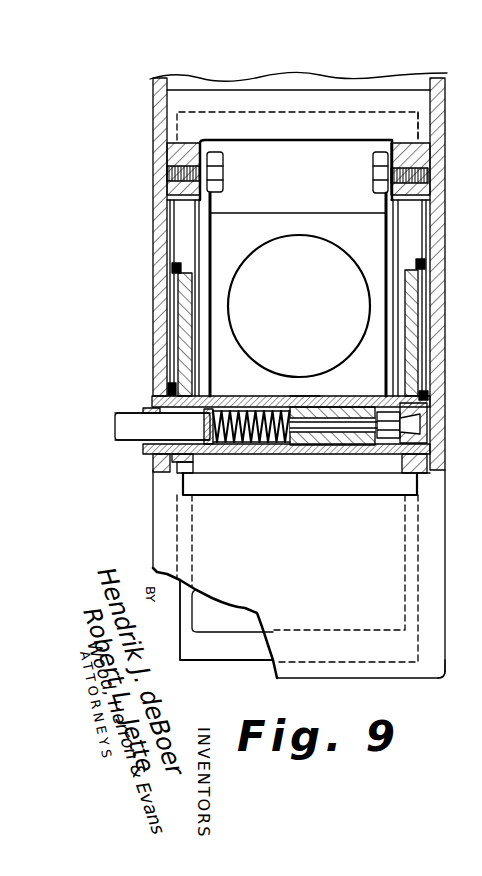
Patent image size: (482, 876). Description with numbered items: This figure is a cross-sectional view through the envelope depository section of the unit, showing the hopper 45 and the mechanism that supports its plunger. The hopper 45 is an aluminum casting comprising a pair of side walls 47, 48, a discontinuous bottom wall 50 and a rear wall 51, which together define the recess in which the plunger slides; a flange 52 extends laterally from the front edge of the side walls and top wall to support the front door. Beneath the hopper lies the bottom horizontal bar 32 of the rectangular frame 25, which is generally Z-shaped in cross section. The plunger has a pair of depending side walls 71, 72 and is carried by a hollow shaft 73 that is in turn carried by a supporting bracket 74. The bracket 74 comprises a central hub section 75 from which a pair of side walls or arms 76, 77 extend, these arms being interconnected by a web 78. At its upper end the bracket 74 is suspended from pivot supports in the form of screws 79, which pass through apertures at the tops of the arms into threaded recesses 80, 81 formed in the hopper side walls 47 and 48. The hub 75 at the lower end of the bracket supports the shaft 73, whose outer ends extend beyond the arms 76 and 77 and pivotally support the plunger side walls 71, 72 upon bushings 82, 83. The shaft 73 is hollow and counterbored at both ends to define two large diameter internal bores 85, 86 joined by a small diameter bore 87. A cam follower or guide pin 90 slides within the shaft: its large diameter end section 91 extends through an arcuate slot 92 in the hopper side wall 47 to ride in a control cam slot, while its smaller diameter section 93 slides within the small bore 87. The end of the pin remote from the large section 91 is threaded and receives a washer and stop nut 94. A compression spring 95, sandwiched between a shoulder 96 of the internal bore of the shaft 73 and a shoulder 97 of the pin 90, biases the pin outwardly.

The rectangular frame 25 is at (478, 798).
The bottom horizontal bar 32 is at (478, 828).
The hopper 45 is at (432, 671).
The side wall 47 is at (158, 313).
The side wall 48 is at (436, 312).
The bottom wall 50 is at (299, 574).
The rear wall 51 is at (350, 680).
The flange 52 is at (454, 134).
The side wall 71 is at (186, 333).
The side wall 72 is at (420, 303).
The hollow shaft 73 is at (334, 437).
The supporting bracket 74 is at (265, 210).
The central hub section 75 is at (318, 403).
The side wall 76 is at (212, 233).
The side wall 77 is at (388, 242).
The web 78 is at (300, 234).
The screw 79 is at (165, 185).
The threaded recess 80 is at (166, 168).
The threaded recess 81 is at (426, 168).
The bushing 82 is at (170, 388).
The bushing 83 is at (430, 394).
The large diameter internal bore 85 is at (234, 408).
The large diameter internal bore 86 is at (431, 424).
The small diameter bore 87 is at (310, 451).
The cam follower pin 90 is at (112, 429).
The large diameter end section 91 is at (126, 439).
The arcuate slot 92 is at (157, 456).
The smaller diameter section 93 is at (366, 422).
The washer and stop nut 94 is at (428, 413).
The compression spring 95 is at (250, 441).
The shoulder 96 is at (305, 404).
The shoulder 97 is at (207, 416).